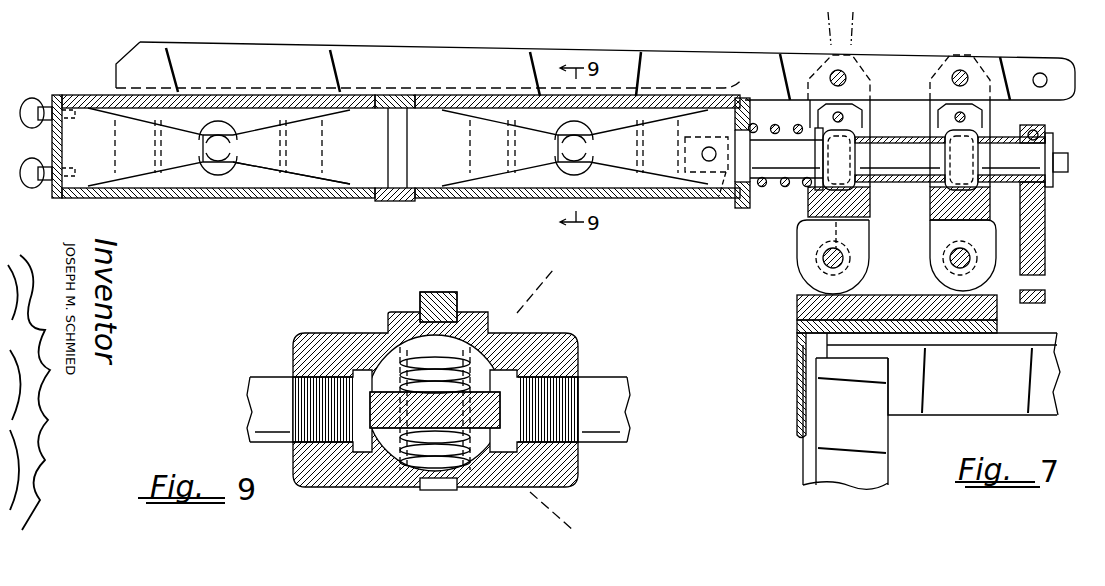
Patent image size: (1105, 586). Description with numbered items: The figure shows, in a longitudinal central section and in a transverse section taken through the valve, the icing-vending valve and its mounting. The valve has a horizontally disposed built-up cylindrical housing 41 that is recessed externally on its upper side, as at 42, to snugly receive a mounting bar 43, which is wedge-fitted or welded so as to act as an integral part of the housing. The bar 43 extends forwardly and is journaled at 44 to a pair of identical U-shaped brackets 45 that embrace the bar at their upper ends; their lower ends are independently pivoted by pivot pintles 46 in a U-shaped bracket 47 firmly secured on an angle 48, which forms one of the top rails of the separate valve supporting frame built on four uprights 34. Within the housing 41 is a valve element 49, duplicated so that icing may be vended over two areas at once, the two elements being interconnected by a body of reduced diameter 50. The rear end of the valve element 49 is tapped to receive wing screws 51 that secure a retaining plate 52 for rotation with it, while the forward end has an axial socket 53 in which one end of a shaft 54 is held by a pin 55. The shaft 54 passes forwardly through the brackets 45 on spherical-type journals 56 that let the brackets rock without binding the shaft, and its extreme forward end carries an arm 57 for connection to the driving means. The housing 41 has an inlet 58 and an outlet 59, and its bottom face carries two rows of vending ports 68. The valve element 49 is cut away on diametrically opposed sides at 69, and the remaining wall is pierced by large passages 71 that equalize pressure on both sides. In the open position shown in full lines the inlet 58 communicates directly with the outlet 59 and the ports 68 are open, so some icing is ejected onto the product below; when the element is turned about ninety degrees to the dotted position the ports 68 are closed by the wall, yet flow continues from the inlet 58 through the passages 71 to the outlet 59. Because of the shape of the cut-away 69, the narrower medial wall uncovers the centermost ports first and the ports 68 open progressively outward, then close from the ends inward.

In FIG. 7, the upright 34 is at (880, 476).
In FIG. 7, the cylindrical housing 41 is at (80, 97).
In FIG. 7, the recess 42 is at (106, 86).
In FIG. 7, the mounting bar 43 is at (343, 50).
In FIG. 9, the mounting bar 43 is at (419, 297).
In FIG. 7, the journal 44 is at (952, 78).
In FIG. 7, the bracket 45 is at (809, 204).
In FIG. 7, the pivot pintle 46 is at (843, 263).
In FIG. 7, the U-shaped bracket 47 is at (997, 313).
In FIG. 7, the angle 48 is at (797, 393).
In FIG. 7, the valve element 49 is at (362, 183).
In FIG. 9, the valve element 49 is at (505, 400).
In FIG. 7, the body of reduced diameter 50 is at (400, 150).
In FIG. 7, the wing screw 51 is at (28, 166).
In FIG. 7, the retaining plate 52 is at (54, 95).
In FIG. 7, the axial socket 53 is at (728, 163).
In FIG. 7, the shaft 54 is at (762, 140).
In FIG. 7, the pin 55 is at (710, 147).
In FIG. 7, the spherical-type journal 56 is at (946, 126).
In FIG. 7, the arm 57 is at (1044, 217).
In FIG. 9, the inlet 58 is at (578, 380).
In FIG. 9, the outlet 59 is at (296, 378).
In FIG. 7, the vending port 68 is at (165, 198).
In FIG. 9, the vending port 68 is at (445, 491).
In FIG. 7, the cut-away 69 is at (206, 134).
In FIG. 9, the cut-away 69 is at (472, 378).
In FIG. 7, the passage 71 is at (318, 143).
In FIG. 9, the passage 71 is at (458, 365).